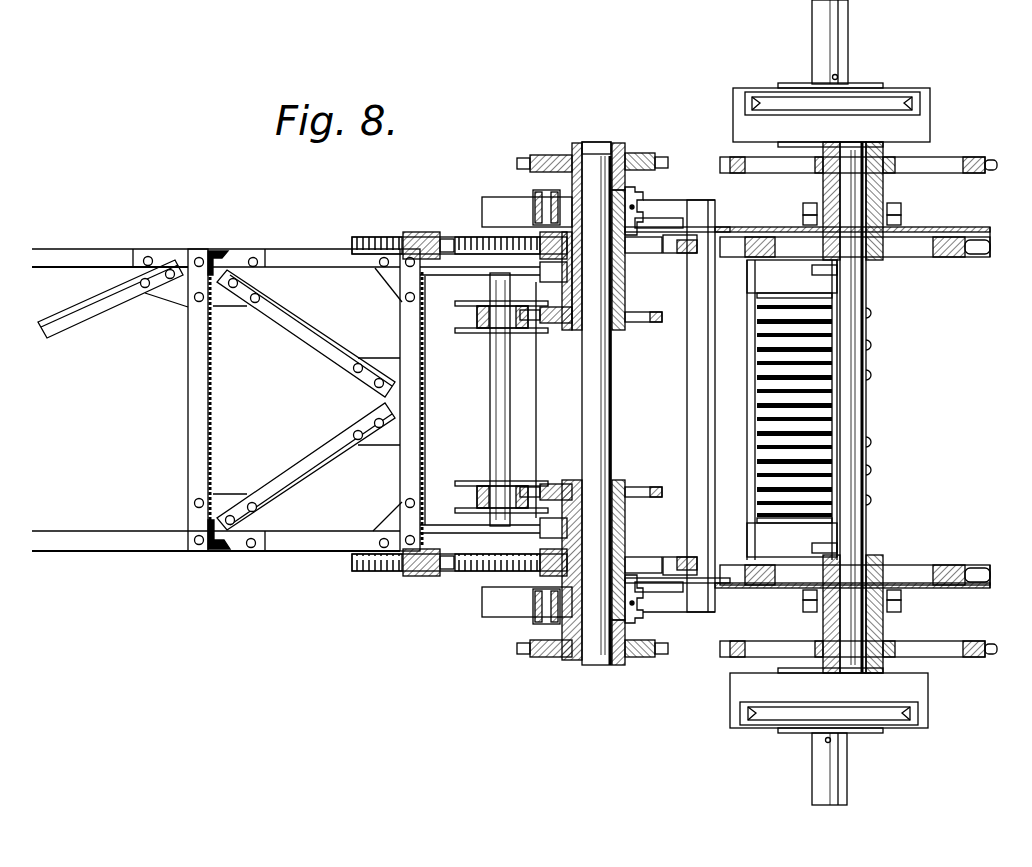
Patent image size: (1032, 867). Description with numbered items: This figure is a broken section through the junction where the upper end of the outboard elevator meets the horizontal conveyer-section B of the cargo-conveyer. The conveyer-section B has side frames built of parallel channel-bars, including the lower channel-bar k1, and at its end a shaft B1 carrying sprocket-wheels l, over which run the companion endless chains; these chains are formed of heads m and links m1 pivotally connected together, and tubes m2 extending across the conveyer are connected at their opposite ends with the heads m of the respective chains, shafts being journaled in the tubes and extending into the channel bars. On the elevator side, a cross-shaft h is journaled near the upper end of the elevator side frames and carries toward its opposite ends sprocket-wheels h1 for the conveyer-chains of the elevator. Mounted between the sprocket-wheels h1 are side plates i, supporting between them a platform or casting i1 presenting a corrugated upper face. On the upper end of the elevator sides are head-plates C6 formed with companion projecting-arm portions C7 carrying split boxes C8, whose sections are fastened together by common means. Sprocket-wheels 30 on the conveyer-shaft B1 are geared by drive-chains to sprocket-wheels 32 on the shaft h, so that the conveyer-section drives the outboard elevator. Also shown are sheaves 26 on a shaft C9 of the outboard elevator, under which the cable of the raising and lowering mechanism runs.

The lower channel-bar k1 is at (110, 240).
The conveyer-section B is at (231, 400).
The tubes m2 is at (472, 399).
The links m1 is at (460, 304).
The heads m is at (482, 336).
The shaft B1 is at (616, 400).
The split boxes C8 is at (562, 190).
The sprocket-wheels 30 is at (652, 154).
The projecting-arm portions C7 is at (686, 207).
The sprocket-wheels l is at (648, 323).
The head-plates C6 is at (745, 236).
The sprocket-wheels h1 is at (946, 257).
The sprocket-wheels 32 is at (962, 160).
The sheaves 26 is at (885, 104).
The shaft C9 is at (818, 772).
The cross-shaft h is at (858, 397).
The side plates i is at (787, 298).
The platform or casting i1 is at (757, 397).